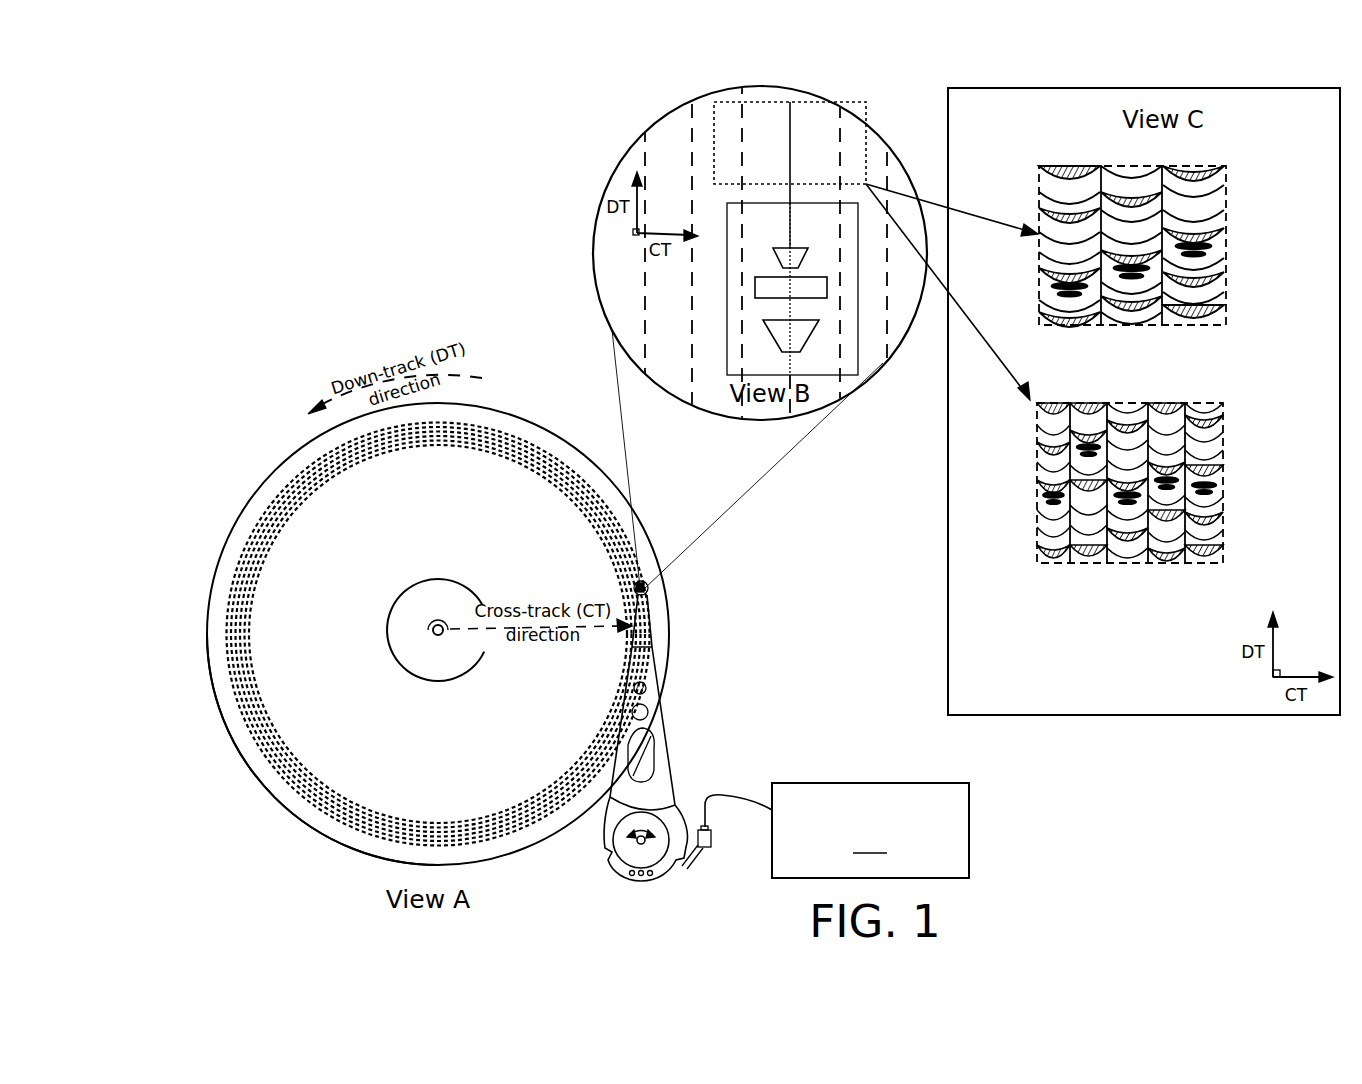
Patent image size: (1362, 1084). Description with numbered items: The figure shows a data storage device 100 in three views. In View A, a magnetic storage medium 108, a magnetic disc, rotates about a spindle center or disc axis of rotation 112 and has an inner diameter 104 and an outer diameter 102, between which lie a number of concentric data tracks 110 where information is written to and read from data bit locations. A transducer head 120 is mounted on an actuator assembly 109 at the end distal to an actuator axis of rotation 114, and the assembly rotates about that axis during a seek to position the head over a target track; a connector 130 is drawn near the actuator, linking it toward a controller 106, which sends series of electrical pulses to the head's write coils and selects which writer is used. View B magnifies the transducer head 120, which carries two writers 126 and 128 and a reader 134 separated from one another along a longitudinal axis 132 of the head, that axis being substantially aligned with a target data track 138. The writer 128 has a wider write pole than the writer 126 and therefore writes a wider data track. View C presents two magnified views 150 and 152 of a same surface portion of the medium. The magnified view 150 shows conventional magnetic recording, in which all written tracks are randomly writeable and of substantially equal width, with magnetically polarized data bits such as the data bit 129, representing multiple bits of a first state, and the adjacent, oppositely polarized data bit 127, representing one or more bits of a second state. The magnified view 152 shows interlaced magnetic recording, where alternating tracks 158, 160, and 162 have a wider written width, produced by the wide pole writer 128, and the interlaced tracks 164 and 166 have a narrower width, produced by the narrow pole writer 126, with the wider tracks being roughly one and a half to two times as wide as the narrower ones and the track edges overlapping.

The data storage device 100 is at (345, 188).
The outer diameter 102 is at (280, 462).
The inner diameter 104 is at (385, 640).
The controller 106 is at (837, 830).
The magnetic storage medium 108 is at (295, 818).
The actuator assembly 109 is at (663, 724).
The data tracks 110 is at (272, 762).
The disc axis of rotation 112 is at (431, 627).
The actuator axis of rotation 114 is at (638, 842).
The transducer head 120 is at (647, 590).
The writer 126 is at (772, 246).
The data bit 127 is at (1125, 190).
The writer 128 is at (775, 318).
The data bit 129 is at (1127, 168).
The flex circuit connector 130 is at (686, 868).
The longitudinal axis 132 is at (790, 213).
The reader 134 is at (791, 287).
The target data track 138 is at (790, 116).
The magnified view 150 is at (1092, 219).
The magnified view 152 is at (1107, 554).
The alternating track 158 is at (1057, 565).
The alternating track 160 is at (1126, 565).
The alternating track 162 is at (1203, 565).
The interlaced track 164 is at (1088, 565).
The interlaced track 166 is at (1168, 565).